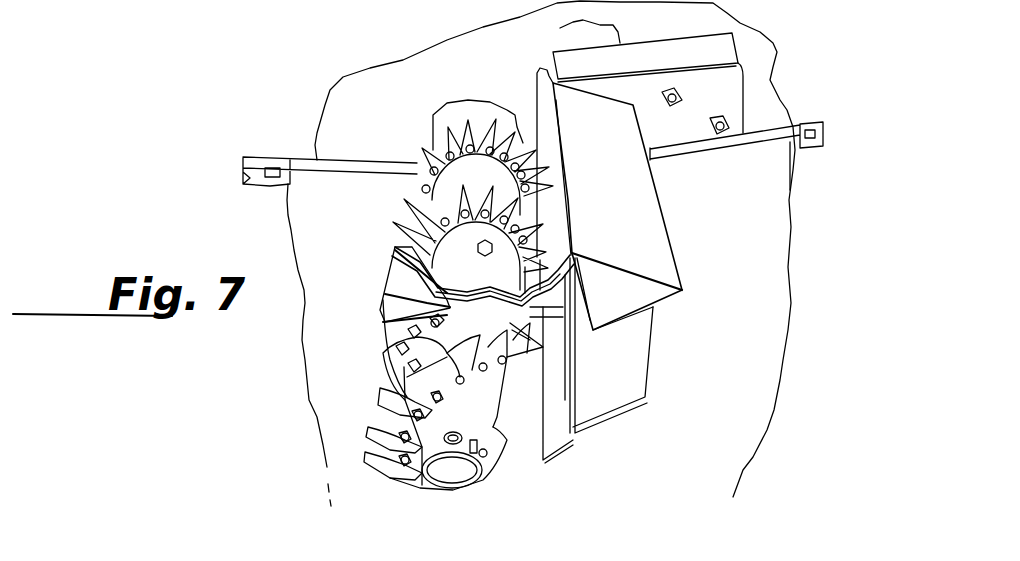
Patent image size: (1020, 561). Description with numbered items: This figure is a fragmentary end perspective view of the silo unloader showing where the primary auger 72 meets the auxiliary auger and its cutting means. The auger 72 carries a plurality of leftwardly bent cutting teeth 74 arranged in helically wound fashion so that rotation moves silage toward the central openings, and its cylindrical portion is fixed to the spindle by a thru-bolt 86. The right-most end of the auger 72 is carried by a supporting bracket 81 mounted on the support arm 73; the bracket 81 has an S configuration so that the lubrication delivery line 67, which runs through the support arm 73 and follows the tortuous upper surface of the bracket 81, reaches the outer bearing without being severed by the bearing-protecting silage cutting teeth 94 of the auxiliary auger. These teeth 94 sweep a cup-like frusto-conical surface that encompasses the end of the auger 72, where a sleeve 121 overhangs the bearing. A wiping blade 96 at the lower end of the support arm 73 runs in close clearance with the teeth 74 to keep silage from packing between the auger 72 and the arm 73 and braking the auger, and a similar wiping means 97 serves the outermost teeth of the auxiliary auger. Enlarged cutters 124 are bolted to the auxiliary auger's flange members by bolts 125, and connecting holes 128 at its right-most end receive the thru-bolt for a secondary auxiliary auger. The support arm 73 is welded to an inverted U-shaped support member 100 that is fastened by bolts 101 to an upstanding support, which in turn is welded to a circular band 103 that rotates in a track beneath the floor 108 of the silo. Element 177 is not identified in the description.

The lubrication delivery line 67 is at (566, 253).
The auger 72 is at (443, 117).
The support arm 73 is at (655, 222).
The cutting teeth 74 is at (484, 130).
The supporting bracket 81 is at (550, 313).
The thru-bolt 86 is at (486, 256).
The bearing-protecting silage cutting teeth 94 is at (395, 270).
The wiping blade 96 is at (538, 80).
The wiping means 97 is at (557, 437).
The support member 100 is at (718, 53).
The bolts 101 is at (723, 125).
The band 103 is at (265, 155).
The floor 108 is at (358, 83).
The sleeve 121 is at (553, 235).
The enlarged cutters 124 is at (405, 322).
The bolts 125 is at (400, 305).
The connecting holes 128 is at (495, 427).
The cutter ring 177 is at (383, 353).